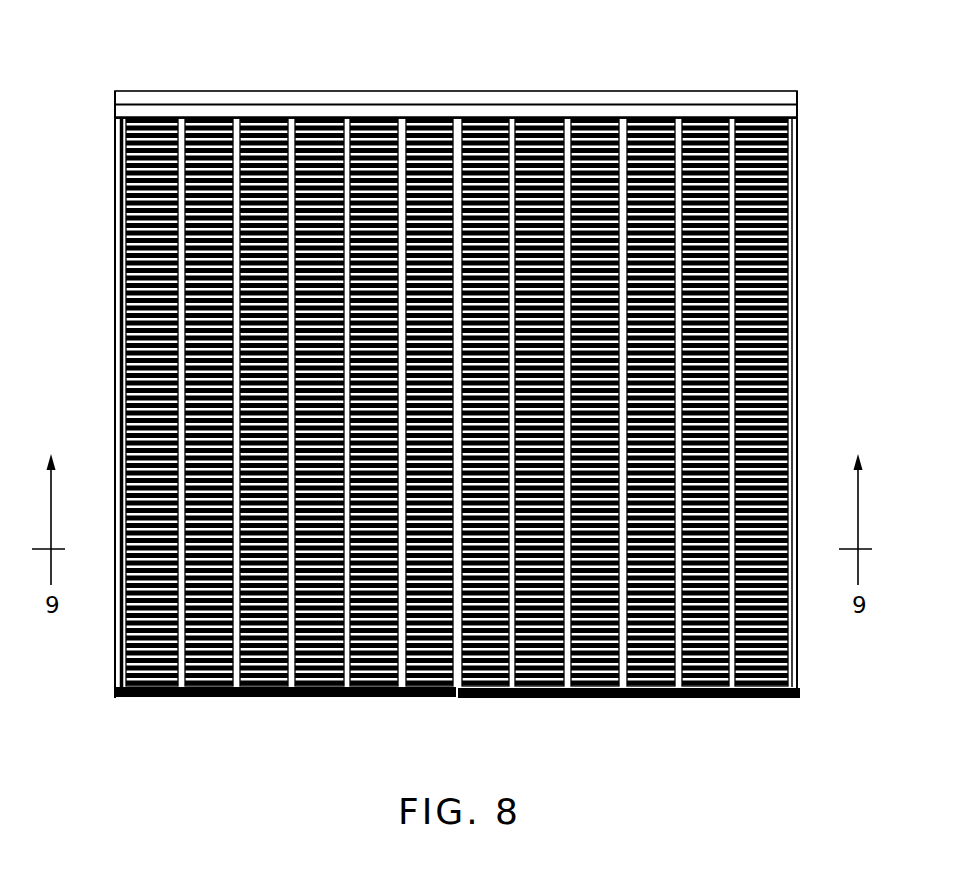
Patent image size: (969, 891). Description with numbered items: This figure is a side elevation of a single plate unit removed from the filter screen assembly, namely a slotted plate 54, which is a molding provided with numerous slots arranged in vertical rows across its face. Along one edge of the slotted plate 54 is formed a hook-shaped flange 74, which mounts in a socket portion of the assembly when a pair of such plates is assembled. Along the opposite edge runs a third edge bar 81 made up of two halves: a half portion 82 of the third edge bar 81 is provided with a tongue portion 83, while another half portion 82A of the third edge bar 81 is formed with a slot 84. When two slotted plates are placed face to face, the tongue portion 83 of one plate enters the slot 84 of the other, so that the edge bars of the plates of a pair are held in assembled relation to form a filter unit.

The slotted plate 54 is at (547, 704).
The hook-shaped flange 74 is at (769, 98).
The third edge bar 81 is at (430, 704).
The half portion of third edge bar 82 is at (259, 698).
The another half portion of third edge bar 82A is at (680, 697).
The tongue portion 83 is at (315, 698).
The slot 84 is at (740, 697).